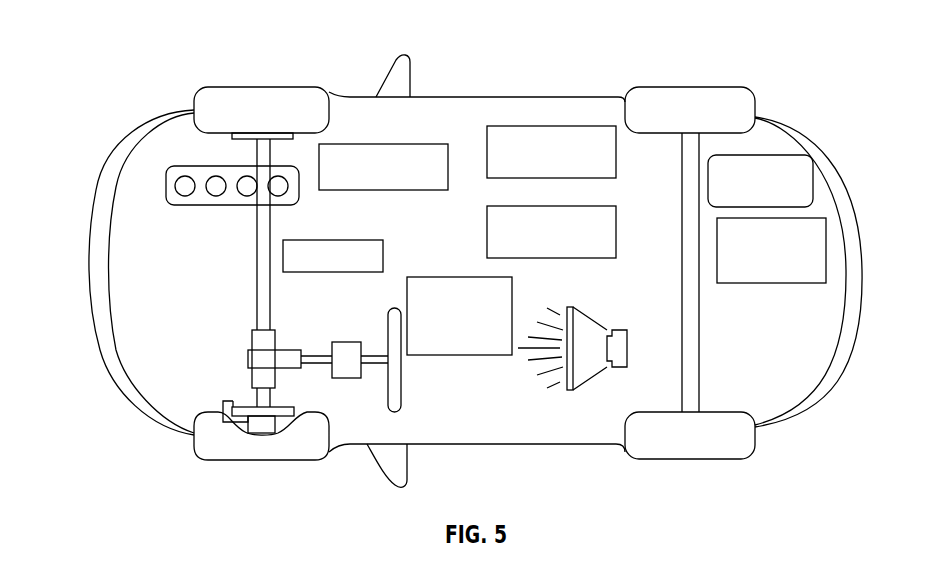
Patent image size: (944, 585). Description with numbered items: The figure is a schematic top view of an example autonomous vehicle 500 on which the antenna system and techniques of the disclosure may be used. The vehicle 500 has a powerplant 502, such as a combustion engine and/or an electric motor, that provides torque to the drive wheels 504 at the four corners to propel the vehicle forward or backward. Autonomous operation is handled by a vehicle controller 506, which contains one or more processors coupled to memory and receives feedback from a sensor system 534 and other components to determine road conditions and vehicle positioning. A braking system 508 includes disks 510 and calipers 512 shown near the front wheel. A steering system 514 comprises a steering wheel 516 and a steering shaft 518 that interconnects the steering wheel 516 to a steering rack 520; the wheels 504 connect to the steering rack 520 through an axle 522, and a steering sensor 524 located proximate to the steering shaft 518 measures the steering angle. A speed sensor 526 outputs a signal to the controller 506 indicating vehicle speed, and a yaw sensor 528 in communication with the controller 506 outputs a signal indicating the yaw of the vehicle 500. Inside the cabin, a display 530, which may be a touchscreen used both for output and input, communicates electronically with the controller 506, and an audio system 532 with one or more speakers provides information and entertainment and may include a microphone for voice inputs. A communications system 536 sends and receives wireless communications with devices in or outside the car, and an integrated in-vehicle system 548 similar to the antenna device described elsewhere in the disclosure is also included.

The autonomous vehicle 500 is at (108, 28).
The powerplant 502 is at (200, 197).
The drive wheels 504 is at (250, 95).
The vehicle controller 506 is at (397, 144).
The braking system 508 is at (299, 357).
The disks 510 is at (294, 407).
The calipers 512 is at (223, 407).
The steering system 514 is at (301, 332).
The steering wheel 516 is at (401, 392).
The steering shaft 518 is at (380, 364).
The steering rack 520 is at (345, 342).
The axle 522 is at (253, 158).
The steering sensor 524 is at (252, 342).
The speed sensor 526 is at (538, 126).
The yaw sensor 528 is at (538, 206).
The display 530 is at (335, 240).
The audio system 532 is at (587, 328).
The sensor system 534 is at (717, 257).
The communications system 536 is at (708, 183).
The integrated in-vehicle system 548 is at (460, 277).